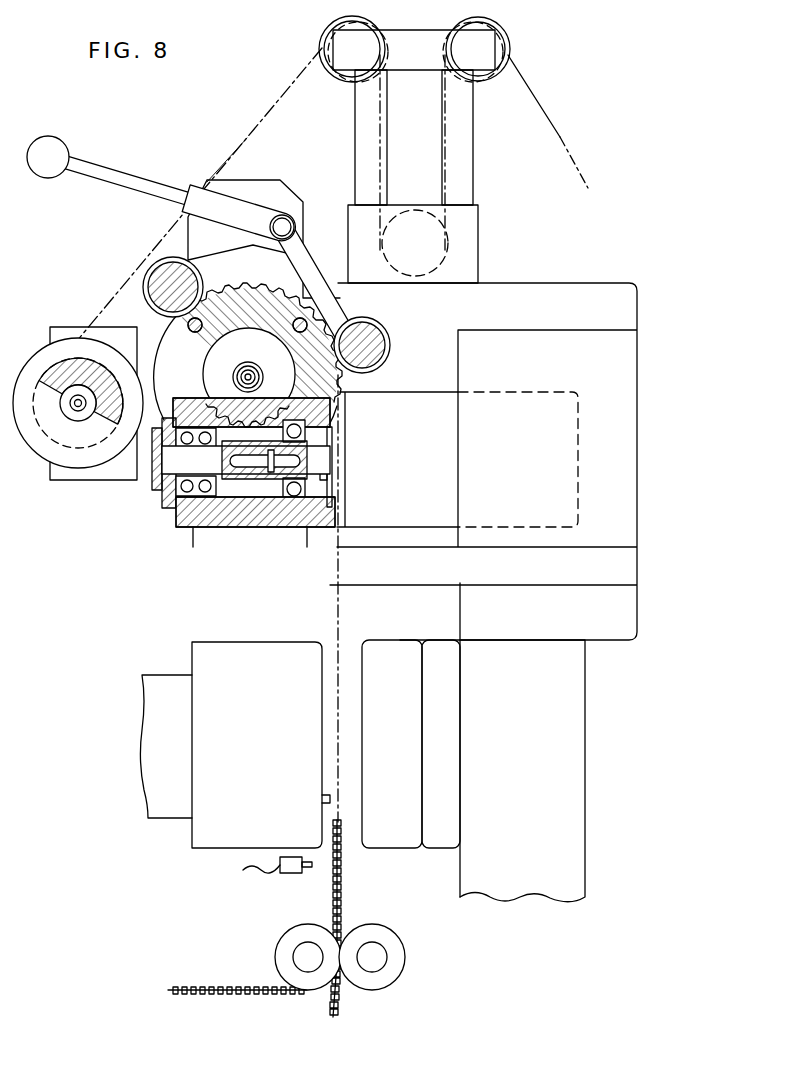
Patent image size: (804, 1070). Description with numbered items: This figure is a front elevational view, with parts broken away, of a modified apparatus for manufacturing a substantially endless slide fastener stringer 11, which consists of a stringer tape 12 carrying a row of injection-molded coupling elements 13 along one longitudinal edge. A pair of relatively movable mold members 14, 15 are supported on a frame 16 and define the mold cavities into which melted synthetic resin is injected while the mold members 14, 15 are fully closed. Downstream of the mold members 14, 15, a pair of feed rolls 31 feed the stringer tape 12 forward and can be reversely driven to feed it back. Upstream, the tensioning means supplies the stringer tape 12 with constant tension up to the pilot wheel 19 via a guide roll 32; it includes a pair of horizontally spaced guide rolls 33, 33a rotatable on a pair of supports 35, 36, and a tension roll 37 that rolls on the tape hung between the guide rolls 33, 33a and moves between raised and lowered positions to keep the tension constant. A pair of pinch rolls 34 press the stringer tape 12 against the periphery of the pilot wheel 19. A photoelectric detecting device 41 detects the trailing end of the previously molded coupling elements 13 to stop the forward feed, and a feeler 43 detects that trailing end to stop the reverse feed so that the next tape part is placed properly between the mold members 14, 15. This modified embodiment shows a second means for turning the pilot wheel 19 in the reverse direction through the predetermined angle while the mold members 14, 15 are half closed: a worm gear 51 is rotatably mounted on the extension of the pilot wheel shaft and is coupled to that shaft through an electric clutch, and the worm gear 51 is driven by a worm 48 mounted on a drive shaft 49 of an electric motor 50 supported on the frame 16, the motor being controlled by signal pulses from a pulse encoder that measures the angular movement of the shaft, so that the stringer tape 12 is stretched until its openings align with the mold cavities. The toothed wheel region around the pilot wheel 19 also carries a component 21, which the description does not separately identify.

The slide fastener stringer 11 is at (242, 978).
The stringer tape 12 is at (556, 110).
The injection-molded coupling elements 13 is at (195, 985).
The first mold member 14 is at (217, 838).
The second mold member 15 is at (388, 838).
The frame 16 is at (165, 810).
The pilot wheel 19 is at (338, 395).
The gear 21 is at (270, 283).
The feed rolls 31 is at (283, 943).
The guide roll 32 is at (78, 462).
The guide roll 33 is at (320, 37).
The guide roll 33a is at (511, 38).
The pinch rolls 34 is at (157, 272).
The support 35 is at (355, 133).
The support 36 is at (474, 133).
The tension roll 37 is at (450, 253).
The photoelectric detecting device 41 is at (292, 873).
The feeler 43 is at (325, 795).
The worm 48 is at (243, 500).
The drive shaft 49 is at (193, 528).
The electric motor 50 is at (560, 418).
The worm gear 51 is at (213, 392).